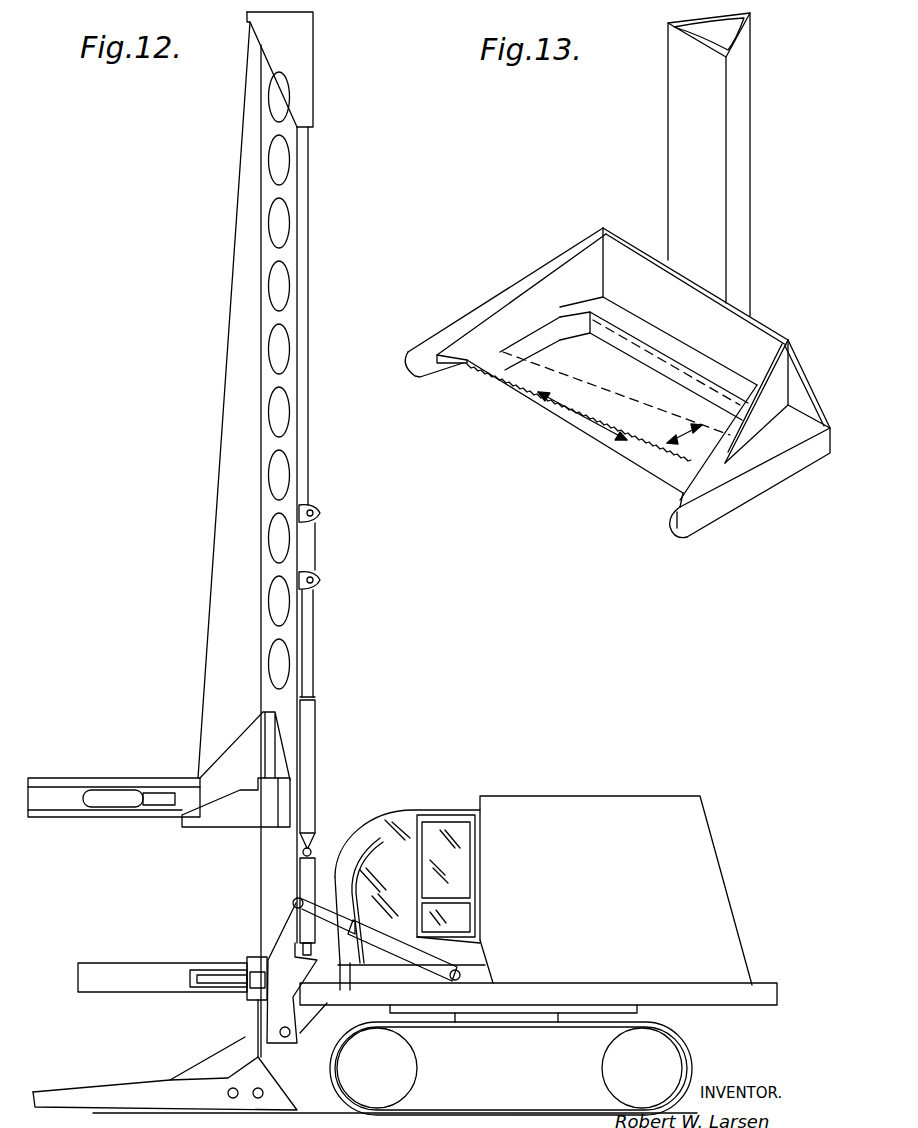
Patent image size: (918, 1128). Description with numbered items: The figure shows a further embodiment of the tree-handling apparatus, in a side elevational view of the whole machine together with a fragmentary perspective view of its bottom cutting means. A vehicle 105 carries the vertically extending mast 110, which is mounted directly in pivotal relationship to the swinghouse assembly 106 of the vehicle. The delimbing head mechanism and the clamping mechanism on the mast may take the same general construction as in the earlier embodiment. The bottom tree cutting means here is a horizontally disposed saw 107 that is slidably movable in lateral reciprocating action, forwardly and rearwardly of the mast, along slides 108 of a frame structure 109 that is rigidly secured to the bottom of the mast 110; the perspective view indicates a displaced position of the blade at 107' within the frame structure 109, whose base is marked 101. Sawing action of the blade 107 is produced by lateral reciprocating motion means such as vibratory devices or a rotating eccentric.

In FIG. 12, the base plate / support frame 101 is at (105, 1079).
In FIG. 13, the base plate / support frame 101 is at (712, 522).
In FIG. 12, the vehicle 105 is at (718, 833).
In FIG. 12, the swinghouse assembly 106 is at (771, 985).
In FIG. 13, the horizontally disposed saw 107 is at (620, 410).
In FIG. 13, the shifted position 107' is at (621, 377).
In FIG. 13, the slides 108 is at (540, 334).
In FIG. 13, the frame structure 109 is at (677, 503).
In FIG. 12, the mast 110 is at (299, 453).